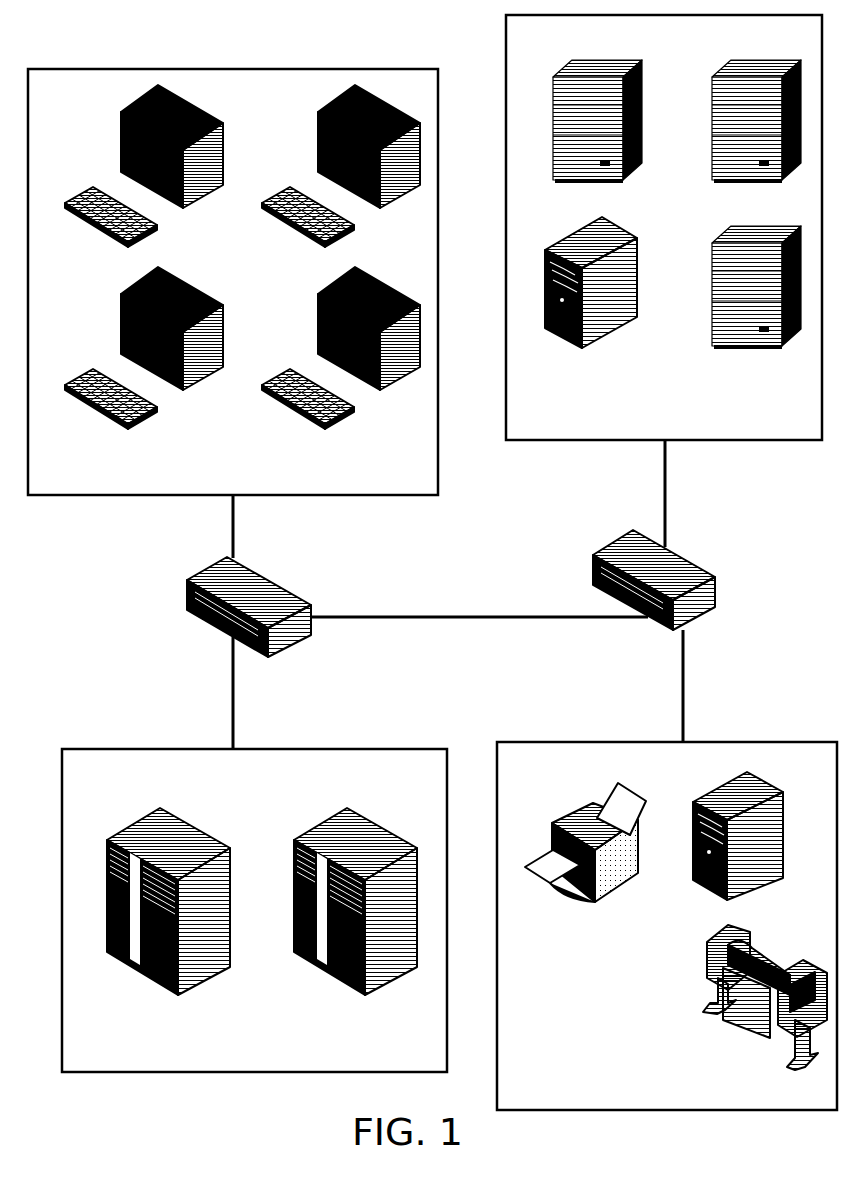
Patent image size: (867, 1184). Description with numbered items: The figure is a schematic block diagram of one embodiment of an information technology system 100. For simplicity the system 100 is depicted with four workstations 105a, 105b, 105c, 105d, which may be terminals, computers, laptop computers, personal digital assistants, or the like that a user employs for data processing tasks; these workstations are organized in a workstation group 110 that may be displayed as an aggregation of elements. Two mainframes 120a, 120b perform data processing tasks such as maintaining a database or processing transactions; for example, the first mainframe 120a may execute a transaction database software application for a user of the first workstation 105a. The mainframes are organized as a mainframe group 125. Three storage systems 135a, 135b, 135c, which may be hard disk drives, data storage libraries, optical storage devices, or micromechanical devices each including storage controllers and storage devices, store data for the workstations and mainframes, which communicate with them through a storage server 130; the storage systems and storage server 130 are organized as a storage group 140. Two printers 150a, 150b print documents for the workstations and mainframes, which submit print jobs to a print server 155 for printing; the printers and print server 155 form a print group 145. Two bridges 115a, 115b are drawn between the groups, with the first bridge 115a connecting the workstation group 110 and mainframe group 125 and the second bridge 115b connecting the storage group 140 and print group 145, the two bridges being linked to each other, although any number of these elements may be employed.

The information technology system 100 is at (95, 50).
The first workstation 105a is at (121, 132).
The workstation 105b is at (318, 132).
The workstation 105c is at (121, 314).
The workstation 105d is at (318, 314).
The workstation group 110 is at (233, 282).
The bridge 115a is at (186, 587).
The bridge 115b is at (592, 560).
The first mainframe 120a is at (150, 812).
The mainframe 120b is at (336, 812).
The mainframe group 125 is at (254, 910).
The storage server 130 is at (587, 227).
The storage system 135a is at (598, 60).
The storage system 135b is at (757, 60).
The storage system 135c is at (757, 227).
The storage group 140 is at (664, 227).
The print group 145 is at (667, 926).
The printer 150a is at (580, 805).
The printer 150b is at (730, 922).
The print server 155 is at (737, 775).